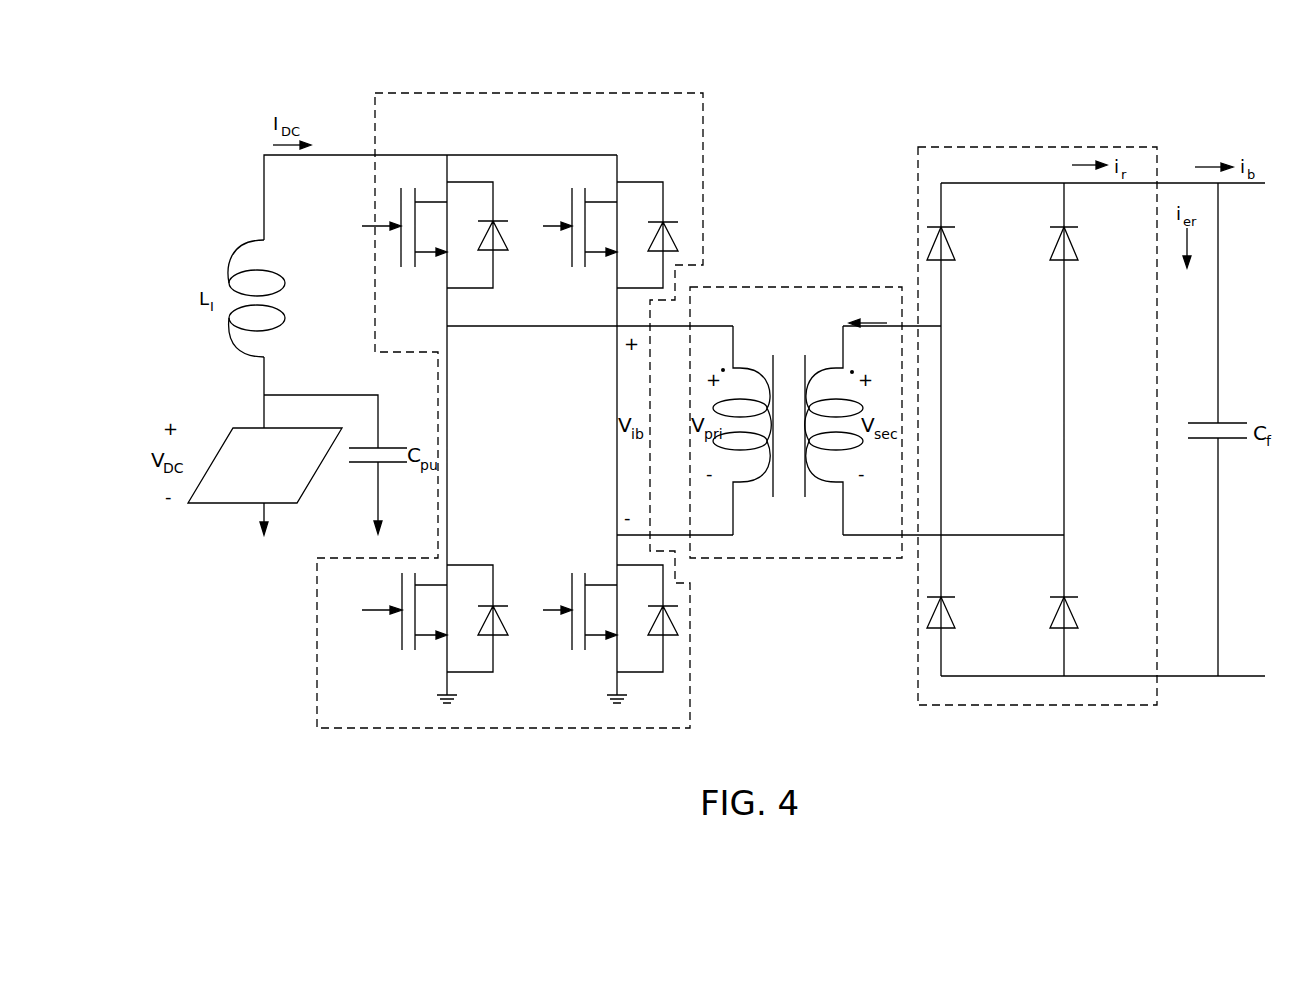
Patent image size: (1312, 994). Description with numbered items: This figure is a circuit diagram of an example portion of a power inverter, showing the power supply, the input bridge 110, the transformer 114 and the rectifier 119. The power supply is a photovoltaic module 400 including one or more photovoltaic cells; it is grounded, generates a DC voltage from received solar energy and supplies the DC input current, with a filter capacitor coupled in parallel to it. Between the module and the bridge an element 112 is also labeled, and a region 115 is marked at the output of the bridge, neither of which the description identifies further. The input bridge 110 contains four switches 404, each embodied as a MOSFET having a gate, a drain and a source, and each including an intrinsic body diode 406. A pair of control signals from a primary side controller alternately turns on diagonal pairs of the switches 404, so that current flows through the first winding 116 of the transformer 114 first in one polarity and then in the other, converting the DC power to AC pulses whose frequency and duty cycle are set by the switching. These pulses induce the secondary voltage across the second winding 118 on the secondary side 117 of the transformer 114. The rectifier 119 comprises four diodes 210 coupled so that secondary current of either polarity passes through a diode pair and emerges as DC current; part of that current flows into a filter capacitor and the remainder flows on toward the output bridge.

The input bridge 110 is at (657, 93).
The inductor 112 is at (283, 285).
The transformer 114 is at (802, 287).
The inverter output connection 115 is at (665, 309).
The first winding 116 is at (740, 370).
The secondary side 117 is at (873, 262).
The second winding 118 is at (838, 482).
The rectifier 119 is at (1077, 147).
The diodes 210 is at (1030, 414).
The photovoltaic module 400 is at (222, 505).
The switches 404 is at (427, 172).
The body diode 406 is at (493, 252).